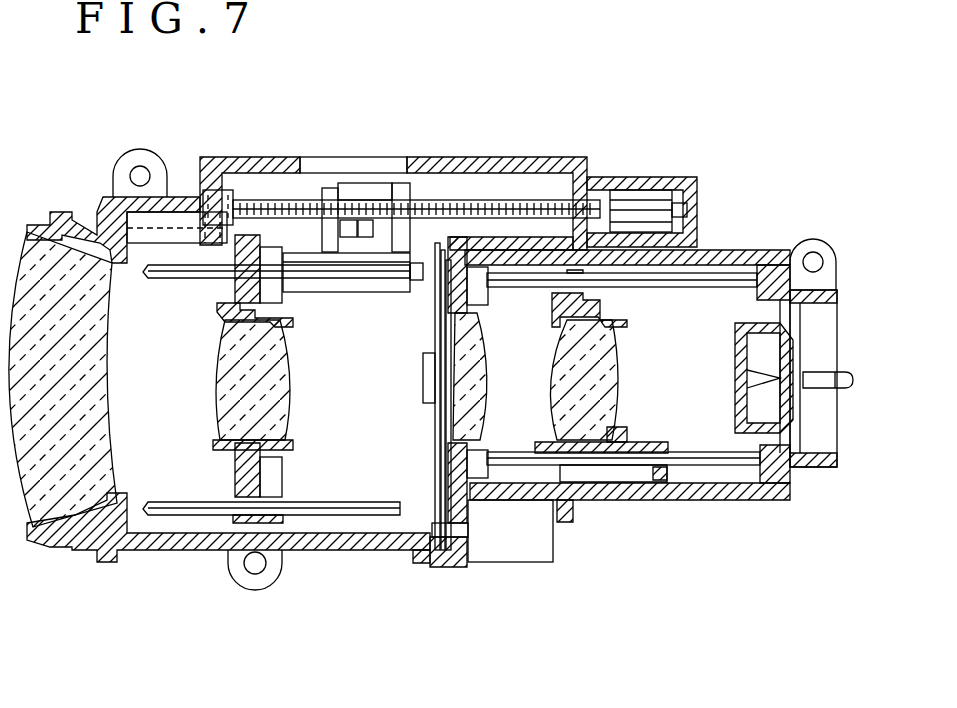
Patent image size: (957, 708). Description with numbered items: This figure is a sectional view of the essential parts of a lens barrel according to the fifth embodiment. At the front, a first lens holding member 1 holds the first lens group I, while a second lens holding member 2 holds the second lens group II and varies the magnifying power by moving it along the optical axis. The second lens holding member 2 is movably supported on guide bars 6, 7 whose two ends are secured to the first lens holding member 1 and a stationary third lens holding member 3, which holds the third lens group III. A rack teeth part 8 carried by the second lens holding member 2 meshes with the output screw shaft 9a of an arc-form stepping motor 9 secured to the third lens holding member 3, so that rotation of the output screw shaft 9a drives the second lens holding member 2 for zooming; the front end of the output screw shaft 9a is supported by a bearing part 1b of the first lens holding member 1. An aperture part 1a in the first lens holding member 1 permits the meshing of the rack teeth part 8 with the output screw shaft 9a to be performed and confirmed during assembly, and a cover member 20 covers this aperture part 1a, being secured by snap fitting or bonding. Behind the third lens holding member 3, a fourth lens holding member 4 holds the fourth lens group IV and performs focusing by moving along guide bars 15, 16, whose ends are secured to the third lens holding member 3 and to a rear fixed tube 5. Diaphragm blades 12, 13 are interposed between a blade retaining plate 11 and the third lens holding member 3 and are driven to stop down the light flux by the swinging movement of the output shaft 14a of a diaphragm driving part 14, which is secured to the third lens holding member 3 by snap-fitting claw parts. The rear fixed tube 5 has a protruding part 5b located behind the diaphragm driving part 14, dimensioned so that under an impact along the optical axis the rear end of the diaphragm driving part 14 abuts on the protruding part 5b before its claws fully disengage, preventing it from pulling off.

The first lens holding member 1 is at (105, 563).
The aperture part 1a is at (333, 163).
The bearing part 1b is at (233, 192).
The second lens holding member 2 is at (232, 492).
The third lens holding member 3 is at (442, 573).
The fourth lens holding member 4 is at (615, 447).
The rear fixed tube 5 is at (730, 490).
The protruding part 5b is at (563, 522).
The guide bar 6 is at (185, 268).
The guide bar 7 is at (168, 512).
The rack teeth part 8 is at (365, 190).
The stepping motor 9 is at (620, 177).
The output screw shaft 9a is at (462, 197).
The blade retaining plate 11 is at (437, 445).
The diaphragm blade 12 is at (433, 473).
The diaphragm blade 13 is at (433, 503).
The diaphragm driving part 14 is at (518, 545).
The output shaft 14a is at (458, 540).
The guide bar 15 is at (725, 280).
The guide bar 16 is at (680, 462).
The cover member 20 is at (272, 158).
The first lens group I is at (78, 382).
The second lens group II is at (258, 352).
The third lens group III is at (490, 347).
The fourth lens group IV is at (602, 363).